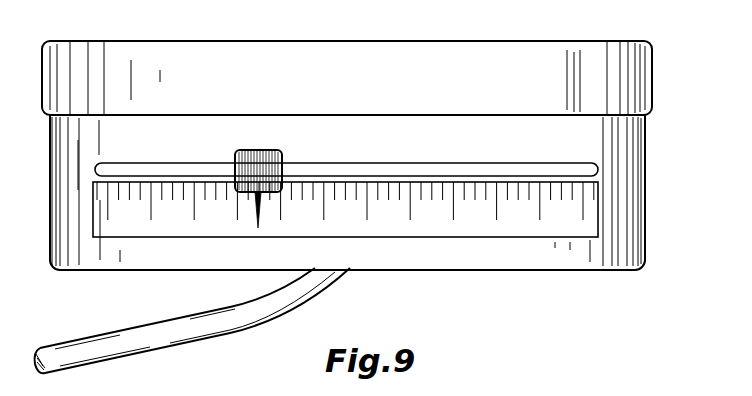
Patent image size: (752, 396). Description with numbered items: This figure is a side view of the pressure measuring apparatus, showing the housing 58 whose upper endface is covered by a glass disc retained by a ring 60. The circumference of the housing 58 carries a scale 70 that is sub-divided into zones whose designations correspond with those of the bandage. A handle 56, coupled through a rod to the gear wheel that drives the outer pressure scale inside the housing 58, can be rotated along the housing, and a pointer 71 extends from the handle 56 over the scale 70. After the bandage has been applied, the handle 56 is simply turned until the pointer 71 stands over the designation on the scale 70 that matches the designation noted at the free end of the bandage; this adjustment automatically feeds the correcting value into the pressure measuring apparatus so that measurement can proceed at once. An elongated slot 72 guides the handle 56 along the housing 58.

The ring 60 is at (545, 52).
The housing 58 is at (625, 240).
The slot 72 is at (100, 170).
The scale 70 is at (470, 222).
The handle 56 is at (277, 158).
The pointer 71 is at (258, 212).